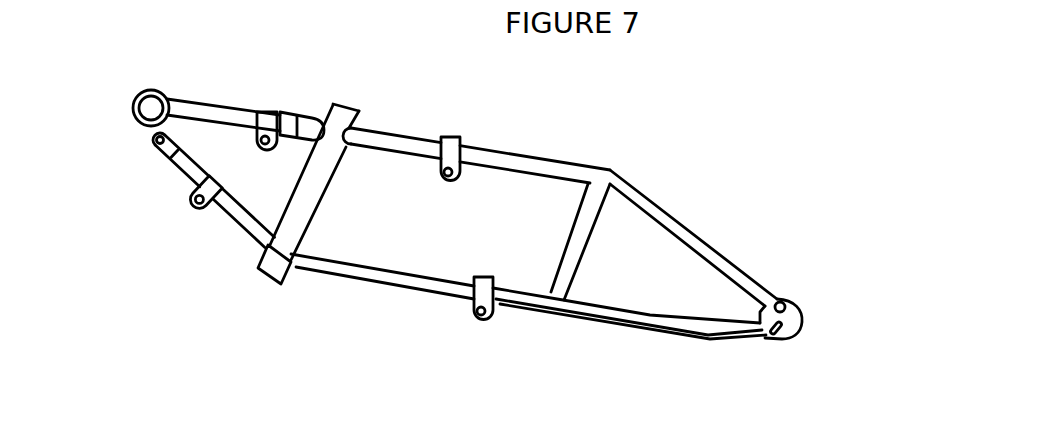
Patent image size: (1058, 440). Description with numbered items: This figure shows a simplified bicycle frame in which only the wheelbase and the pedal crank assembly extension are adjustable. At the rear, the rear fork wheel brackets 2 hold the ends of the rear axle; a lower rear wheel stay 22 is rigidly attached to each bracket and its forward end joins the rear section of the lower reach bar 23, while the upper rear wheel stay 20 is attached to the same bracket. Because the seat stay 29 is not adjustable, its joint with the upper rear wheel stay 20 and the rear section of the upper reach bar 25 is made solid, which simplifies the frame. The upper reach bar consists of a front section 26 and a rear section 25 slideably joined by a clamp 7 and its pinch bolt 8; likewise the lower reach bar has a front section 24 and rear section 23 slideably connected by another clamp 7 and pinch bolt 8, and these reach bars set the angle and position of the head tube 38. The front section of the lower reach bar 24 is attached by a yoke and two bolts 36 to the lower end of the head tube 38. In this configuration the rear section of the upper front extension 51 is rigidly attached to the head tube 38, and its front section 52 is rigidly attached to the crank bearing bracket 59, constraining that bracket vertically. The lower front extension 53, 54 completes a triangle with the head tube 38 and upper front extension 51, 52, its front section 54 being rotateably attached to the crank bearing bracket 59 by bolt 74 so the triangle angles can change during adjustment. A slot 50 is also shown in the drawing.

The rear fork wheel bracket 2 is at (786, 297).
The clamping device 7 is at (263, 111).
The clamp screw 8 is at (196, 203).
The upper rear wheel stay 20 is at (686, 228).
The lower rear wheel stay 22 is at (643, 330).
The rear section of lower reach bar 23 is at (524, 294).
The front section of lower reach bar 24 is at (395, 272).
The rear section of upper reach bar 25 is at (508, 153).
The front section of upper reach bar 26 is at (370, 131).
The seat stay 29 is at (582, 256).
The yoke and bolts joint 36 is at (287, 283).
The head tube 38 is at (308, 202).
The dropout slot 50 is at (771, 336).
The rear section of upper front extension 51 is at (308, 118).
The front section of upper front extension 52 is at (210, 107).
The rear section of lower front extension 53 is at (243, 224).
The front section of lower front extension link 54 is at (170, 162).
The crank bearing bracket 59 is at (147, 91).
The bolt 74 is at (152, 138).